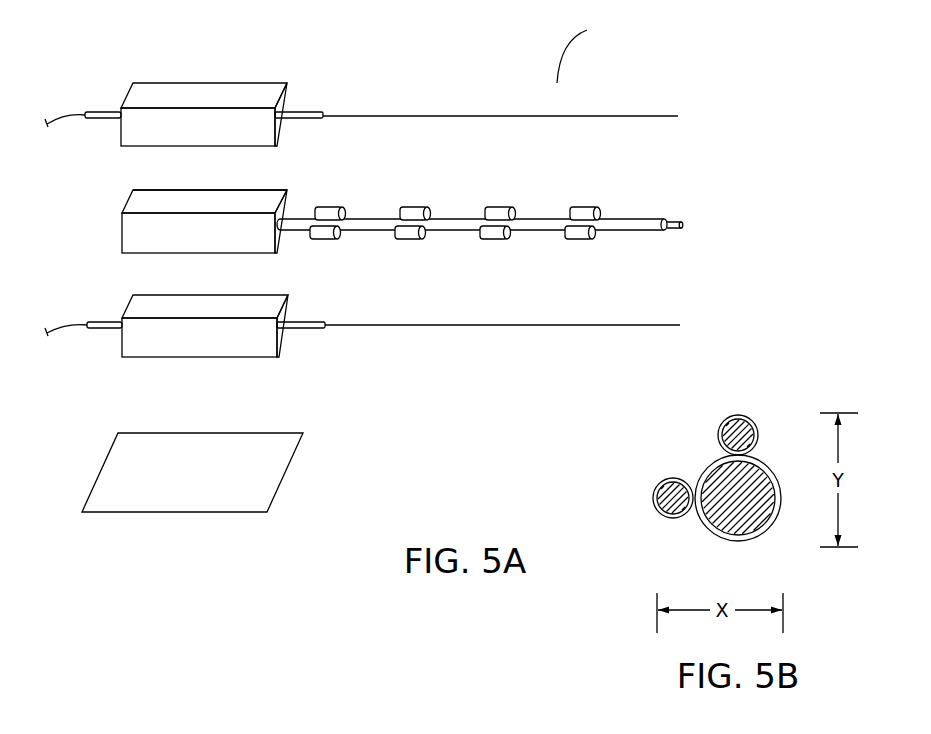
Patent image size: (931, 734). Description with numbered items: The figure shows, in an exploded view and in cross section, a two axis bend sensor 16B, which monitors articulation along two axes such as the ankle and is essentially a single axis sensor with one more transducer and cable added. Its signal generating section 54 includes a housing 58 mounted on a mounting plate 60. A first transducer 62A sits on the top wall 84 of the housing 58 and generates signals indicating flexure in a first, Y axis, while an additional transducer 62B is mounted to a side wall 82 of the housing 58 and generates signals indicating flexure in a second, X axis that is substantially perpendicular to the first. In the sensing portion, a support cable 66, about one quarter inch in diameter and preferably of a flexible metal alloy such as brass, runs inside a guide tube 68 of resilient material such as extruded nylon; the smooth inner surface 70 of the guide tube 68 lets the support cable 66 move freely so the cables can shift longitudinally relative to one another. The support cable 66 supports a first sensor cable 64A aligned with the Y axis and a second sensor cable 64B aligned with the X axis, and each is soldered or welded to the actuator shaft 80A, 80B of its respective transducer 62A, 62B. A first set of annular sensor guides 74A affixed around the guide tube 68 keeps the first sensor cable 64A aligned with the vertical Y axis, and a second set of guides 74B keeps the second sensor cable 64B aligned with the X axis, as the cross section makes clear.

In FIG. 5A, the two axis bend sensor 16B is at (591, 52).
In FIG. 5A, the signal generating section 54 is at (361, 92).
In FIG. 5A, the housing 58 is at (398, 220).
In FIG. 5A, the mounting plate 60 is at (262, 467).
In FIG. 5A, the first transducer 62A is at (258, 138).
In FIG. 5A, the additional transducer 62B is at (215, 337).
In FIG. 5A, the first sensor cable 64A is at (428, 115).
In FIG. 5B, the first sensor cable 64A is at (737, 420).
In FIG. 5A, the second sensor cable 64B is at (553, 328).
In FIG. 5B, the second sensor cable 64B is at (677, 504).
In FIG. 5A, the support cable 66 is at (681, 221).
In FIG. 5B, the support cable 66 is at (738, 535).
In FIG. 5A, the guide tube 68 is at (637, 223).
In FIG. 5B, the guide tube 68 is at (753, 514).
In FIG. 5B, the inner surface 70 is at (756, 514).
In FIG. 5A, the first set of annular sensor guides 74A is at (584, 207).
In FIG. 5B, the first set of annular sensor guides 74A is at (711, 414).
In FIG. 5A, the second set of guides 74B is at (582, 240).
In FIG. 5B, the second set of guides 74B is at (638, 521).
In FIG. 5A, the actuator shaft 80A is at (303, 112).
In FIG. 5A, the actuator shaft 80B is at (298, 323).
In FIG. 5A, the side wall 82 is at (243, 243).
In FIG. 5A, the top wall 84 is at (223, 199).